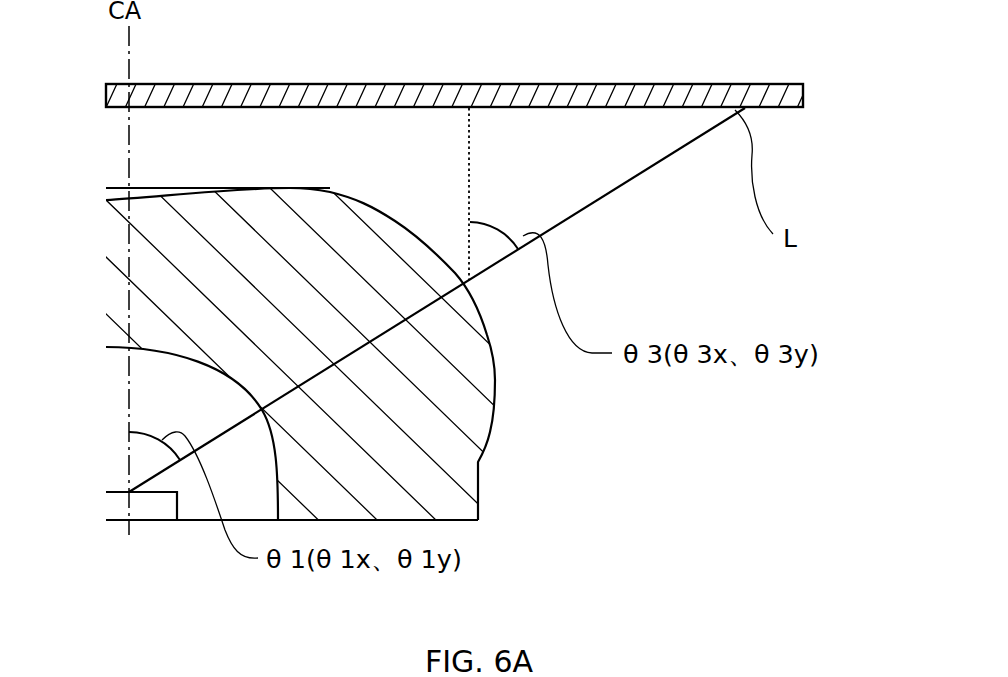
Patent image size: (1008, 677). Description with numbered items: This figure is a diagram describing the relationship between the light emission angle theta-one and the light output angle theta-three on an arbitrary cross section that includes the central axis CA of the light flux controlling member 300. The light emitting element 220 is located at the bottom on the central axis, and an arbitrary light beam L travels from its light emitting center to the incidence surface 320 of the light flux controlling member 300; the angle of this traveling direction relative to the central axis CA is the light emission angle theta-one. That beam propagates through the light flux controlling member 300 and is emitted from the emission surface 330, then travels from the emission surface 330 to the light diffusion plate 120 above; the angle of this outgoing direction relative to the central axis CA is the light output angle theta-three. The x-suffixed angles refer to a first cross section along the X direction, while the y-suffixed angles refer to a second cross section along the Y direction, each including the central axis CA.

The light diffusion plate 120 is at (795, 99).
The light flux controlling member 300 is at (477, 418).
The emission surface 330 is at (328, 190).
The incidence surface 320 is at (153, 348).
The light emitting element 220 is at (143, 510).